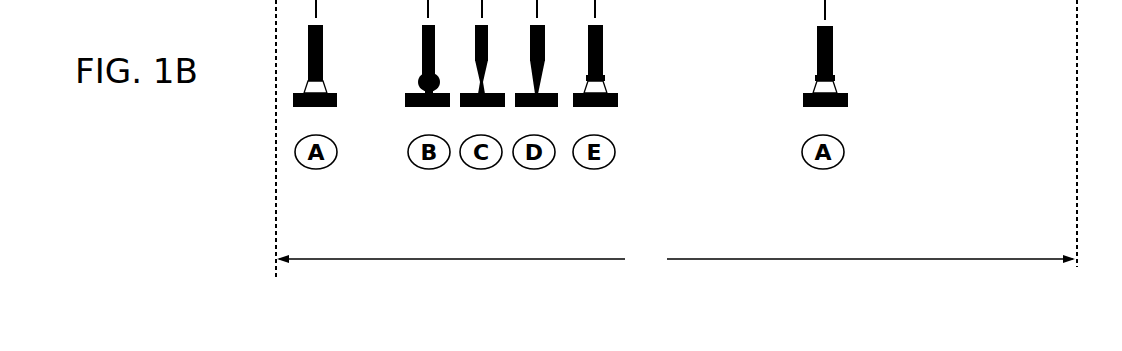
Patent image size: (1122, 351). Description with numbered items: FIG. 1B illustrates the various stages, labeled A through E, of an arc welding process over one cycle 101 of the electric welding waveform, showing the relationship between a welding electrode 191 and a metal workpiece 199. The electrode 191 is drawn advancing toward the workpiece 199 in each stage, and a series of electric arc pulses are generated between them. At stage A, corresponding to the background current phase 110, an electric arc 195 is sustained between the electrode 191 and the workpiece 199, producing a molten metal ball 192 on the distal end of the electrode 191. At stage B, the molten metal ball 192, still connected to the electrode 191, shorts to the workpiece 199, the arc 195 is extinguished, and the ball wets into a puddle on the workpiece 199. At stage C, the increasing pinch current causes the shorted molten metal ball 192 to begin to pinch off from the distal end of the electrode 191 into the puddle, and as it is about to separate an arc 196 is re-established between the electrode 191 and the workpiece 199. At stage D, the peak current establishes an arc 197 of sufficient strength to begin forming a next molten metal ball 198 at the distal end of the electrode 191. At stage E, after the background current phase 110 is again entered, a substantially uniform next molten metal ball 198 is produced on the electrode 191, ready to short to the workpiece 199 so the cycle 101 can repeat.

The cycle 101 is at (676, 261).
The background current phase 110 is at (1044, 133).
The welding electrode 191 is at (323, 33).
The molten metal ball 192 is at (308, 78).
The electric arc 195 is at (327, 88).
The arc 196 is at (536, 92).
The arc 197 is at (607, 88).
The next molten metal ball 198 is at (606, 78).
The metal workpiece 199 is at (337, 100).